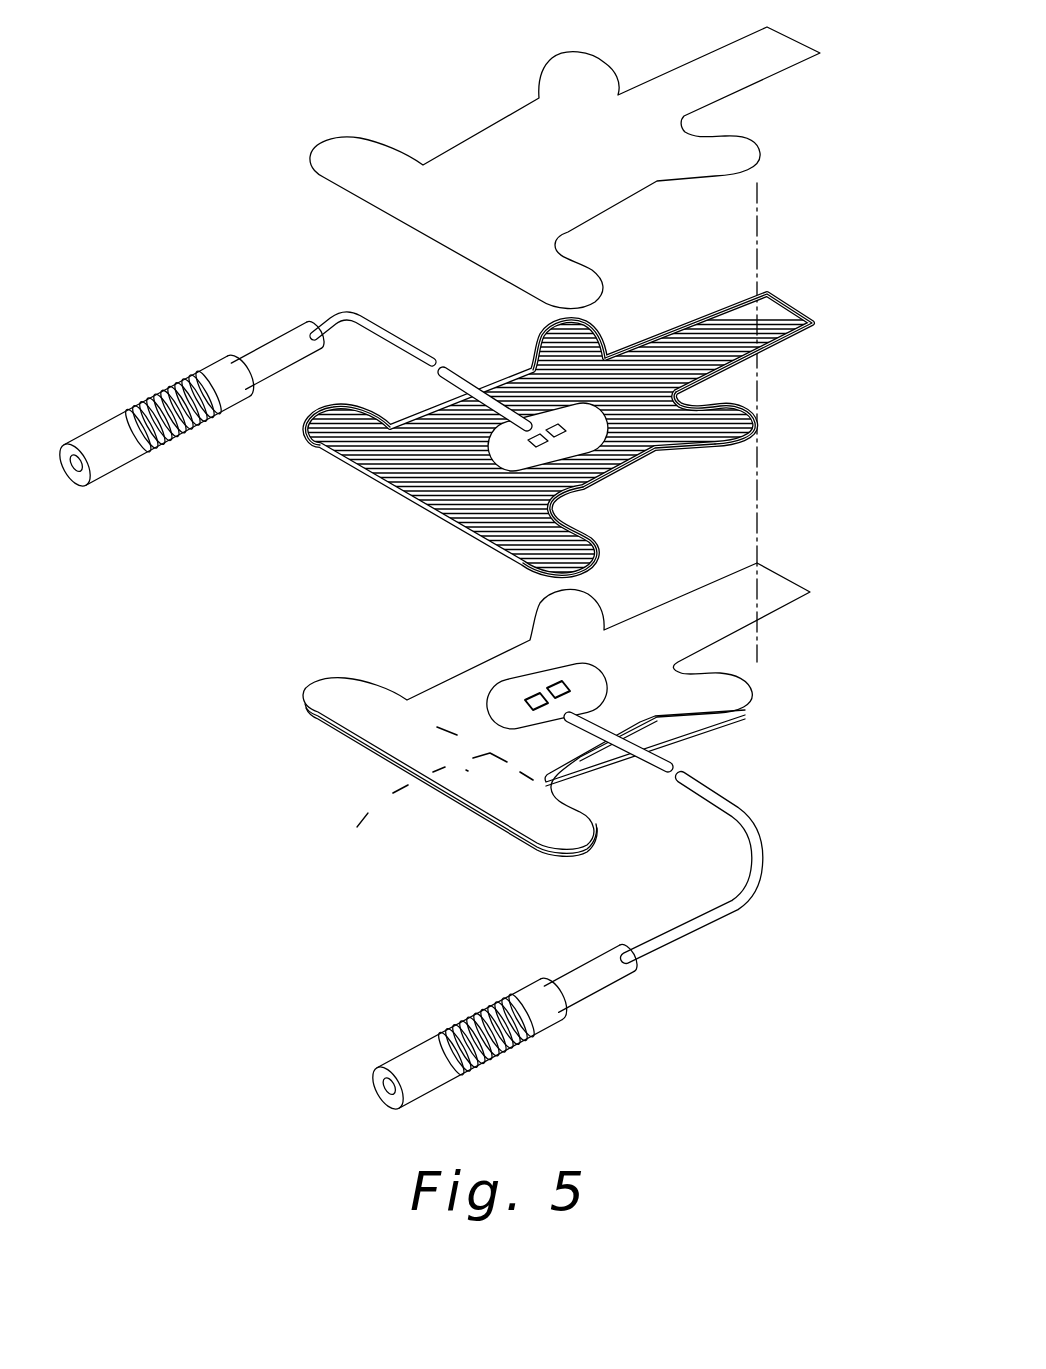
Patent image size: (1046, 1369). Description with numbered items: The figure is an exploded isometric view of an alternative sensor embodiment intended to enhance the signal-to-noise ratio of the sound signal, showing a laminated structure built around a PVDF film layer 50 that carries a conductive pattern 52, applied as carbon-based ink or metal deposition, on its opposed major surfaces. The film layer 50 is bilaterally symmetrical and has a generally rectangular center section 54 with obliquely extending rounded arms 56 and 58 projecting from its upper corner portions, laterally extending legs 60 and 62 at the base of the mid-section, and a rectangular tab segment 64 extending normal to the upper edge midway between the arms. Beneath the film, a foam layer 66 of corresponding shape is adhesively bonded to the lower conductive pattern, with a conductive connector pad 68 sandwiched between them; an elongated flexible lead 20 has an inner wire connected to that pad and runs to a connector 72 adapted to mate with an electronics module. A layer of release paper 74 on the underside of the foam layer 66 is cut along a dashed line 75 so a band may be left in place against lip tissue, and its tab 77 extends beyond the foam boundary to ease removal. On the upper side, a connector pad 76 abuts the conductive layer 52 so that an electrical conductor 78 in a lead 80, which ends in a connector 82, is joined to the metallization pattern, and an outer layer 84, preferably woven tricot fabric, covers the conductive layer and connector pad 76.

The lead wire 20 is at (760, 823).
The PVDF film layer 50 is at (746, 400).
The conductive pattern 52 is at (523, 505).
The center section 54 is at (590, 460).
The rounded arm 56 is at (753, 430).
The rounded arm 58 is at (603, 320).
The leg 60 is at (357, 432).
The leg 62 is at (560, 553).
The rectangular tab segment 64 is at (763, 313).
The foam layer 66 is at (480, 687).
The conductive connector pad 68 is at (527, 686).
The connector 72 is at (410, 1050).
The release paper 74 is at (697, 749).
The dashed line 75 is at (342, 844).
The connector pad 76 is at (570, 413).
The tab 77 is at (597, 770).
The electrical conductor 78 is at (520, 430).
The lead 80 is at (340, 320).
The connector 82 is at (102, 413).
The outer layer 84 is at (550, 143).